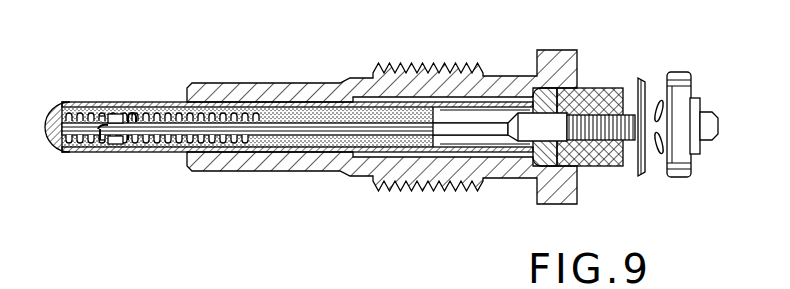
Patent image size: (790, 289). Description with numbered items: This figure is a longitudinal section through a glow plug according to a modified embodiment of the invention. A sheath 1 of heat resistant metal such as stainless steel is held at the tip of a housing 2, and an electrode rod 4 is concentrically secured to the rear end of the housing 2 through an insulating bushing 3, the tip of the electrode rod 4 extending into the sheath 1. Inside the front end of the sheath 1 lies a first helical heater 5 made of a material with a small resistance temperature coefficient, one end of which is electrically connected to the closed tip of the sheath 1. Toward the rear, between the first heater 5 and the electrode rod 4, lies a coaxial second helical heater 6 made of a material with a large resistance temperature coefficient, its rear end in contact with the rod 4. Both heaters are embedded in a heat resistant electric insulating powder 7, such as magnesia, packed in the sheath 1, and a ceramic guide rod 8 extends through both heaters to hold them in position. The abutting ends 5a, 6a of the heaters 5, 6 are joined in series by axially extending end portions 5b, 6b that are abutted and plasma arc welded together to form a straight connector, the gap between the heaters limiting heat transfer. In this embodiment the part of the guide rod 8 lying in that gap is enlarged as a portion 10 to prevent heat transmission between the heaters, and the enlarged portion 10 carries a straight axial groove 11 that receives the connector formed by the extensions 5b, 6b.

The sheath 1 is at (228, 88).
The housing 2 is at (422, 73).
The insulating bushing 3 is at (613, 166).
The electrode rod 4 is at (494, 131).
The first helical heater 5 is at (81, 103).
The abutting end of first heater 5a is at (96, 152).
The axially extending end portion of first heater 5b is at (103, 107).
The second helical heater 6 is at (200, 107).
The abutting end of second heater 6a is at (137, 110).
The axially extending end portion of second heater 6b is at (123, 116).
The heat resistant electric insulating powder 7 is at (327, 147).
The guide rod 8 is at (177, 128).
The enlarged portion 10 is at (123, 152).
The straight axial groove 11 is at (115, 152).